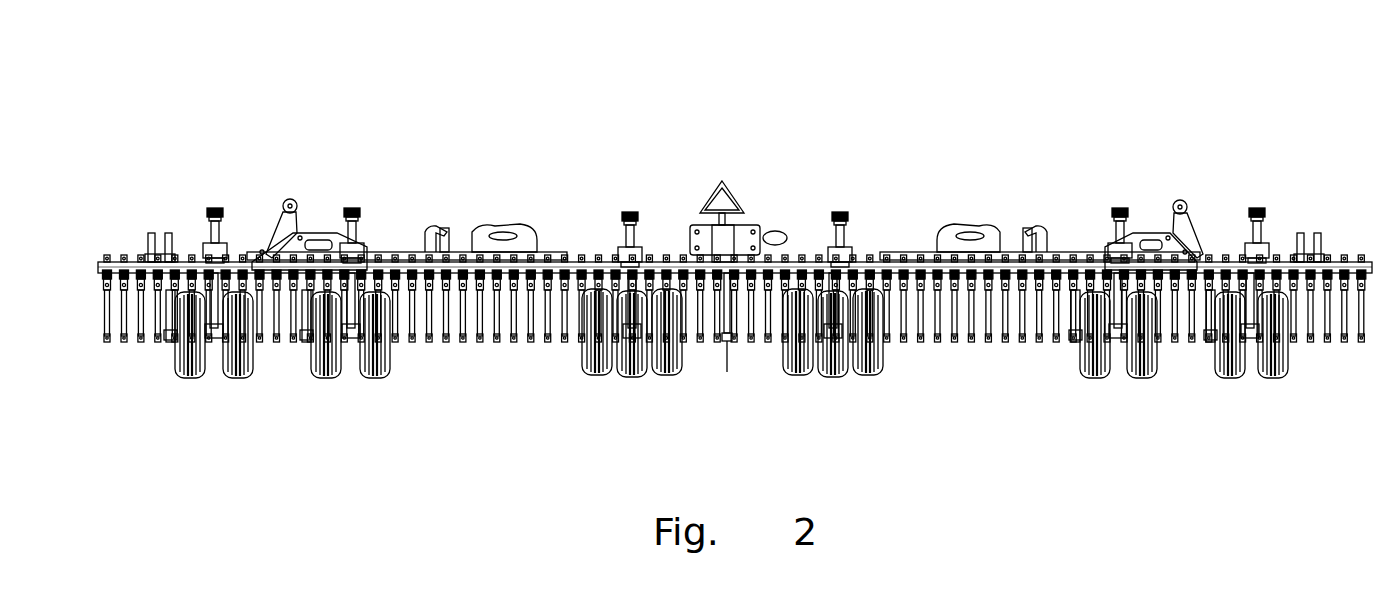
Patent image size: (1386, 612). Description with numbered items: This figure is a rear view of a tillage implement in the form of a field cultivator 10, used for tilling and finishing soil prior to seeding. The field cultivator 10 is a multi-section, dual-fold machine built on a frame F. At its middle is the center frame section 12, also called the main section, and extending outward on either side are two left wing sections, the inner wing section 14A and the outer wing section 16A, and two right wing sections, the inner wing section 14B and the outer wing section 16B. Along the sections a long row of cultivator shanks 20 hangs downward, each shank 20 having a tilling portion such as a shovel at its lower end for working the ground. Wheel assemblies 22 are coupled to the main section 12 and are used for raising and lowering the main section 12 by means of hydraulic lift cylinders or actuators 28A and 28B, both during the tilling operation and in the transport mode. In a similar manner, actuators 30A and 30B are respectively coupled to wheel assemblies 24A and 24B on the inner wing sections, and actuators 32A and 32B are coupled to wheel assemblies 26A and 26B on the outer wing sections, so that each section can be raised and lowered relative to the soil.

The field cultivator 10 is at (961, 99).
The center frame section 12 is at (723, 166).
The inner wing section 14A is at (413, 205).
The inner wing section 14B is at (1040, 195).
The outer wing section 16A is at (178, 205).
The outer wing section 16B is at (1279, 200).
The cultivator shank 20 is at (447, 342).
The wheel assembly 22 is at (689, 378).
The wheel assembly 24A is at (353, 387).
The wheel assembly 24B is at (1115, 392).
The wheel assembly 26A is at (212, 381).
The wheel assembly 26B is at (1250, 392).
The hydraulic lift cylinder 28A is at (624, 228).
The hydraulic lift cylinder 28B is at (846, 228).
The actuator 30A is at (344, 218).
The actuator 30B is at (1112, 218).
The actuator 32A is at (228, 222).
The actuator 32B is at (1249, 212).
The frame F is at (1326, 265).